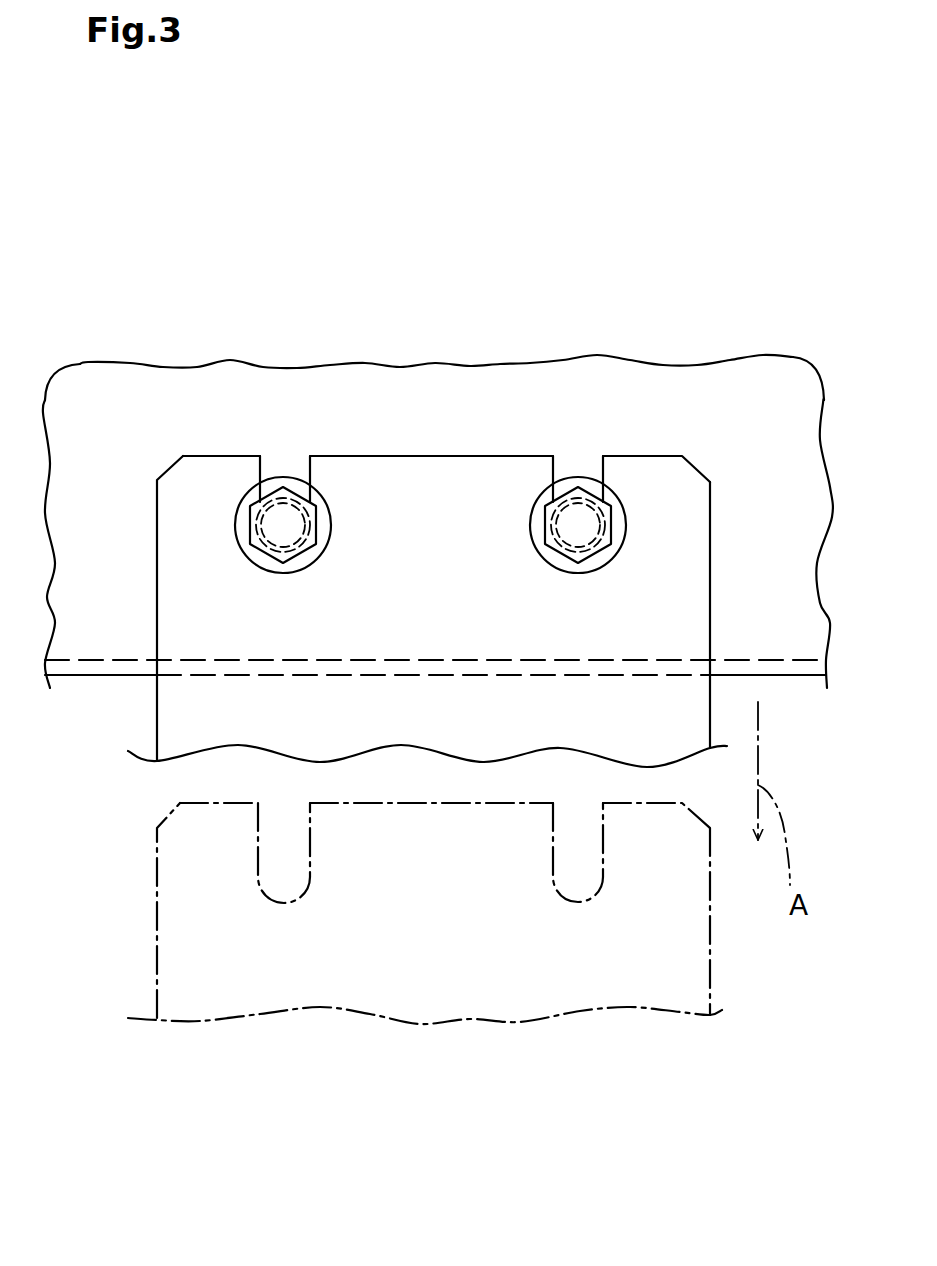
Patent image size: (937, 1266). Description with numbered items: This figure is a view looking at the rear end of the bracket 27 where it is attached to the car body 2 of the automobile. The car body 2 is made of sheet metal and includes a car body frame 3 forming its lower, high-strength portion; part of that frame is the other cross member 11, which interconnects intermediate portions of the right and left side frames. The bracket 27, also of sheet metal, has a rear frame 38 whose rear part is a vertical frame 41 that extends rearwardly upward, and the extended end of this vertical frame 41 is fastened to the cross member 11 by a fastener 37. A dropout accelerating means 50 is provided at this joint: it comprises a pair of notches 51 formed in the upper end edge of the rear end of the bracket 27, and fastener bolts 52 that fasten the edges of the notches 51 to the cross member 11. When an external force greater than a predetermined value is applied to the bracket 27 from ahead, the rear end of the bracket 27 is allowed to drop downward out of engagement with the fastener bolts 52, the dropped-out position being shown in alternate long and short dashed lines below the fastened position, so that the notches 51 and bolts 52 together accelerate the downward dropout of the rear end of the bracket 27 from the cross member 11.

The car body 2 is at (375, 315).
The car body frame 3 is at (401, 383).
The another cross member 11 is at (461, 405).
The bracket 27 is at (368, 824).
The fastener 37 is at (247, 511).
The rear frame 38 is at (157, 600).
The vertical frame 41 is at (173, 710).
The dropout accelerating means 50 is at (432, 394).
The notch 51 is at (300, 480).
The fastener bolt 52 is at (278, 487).